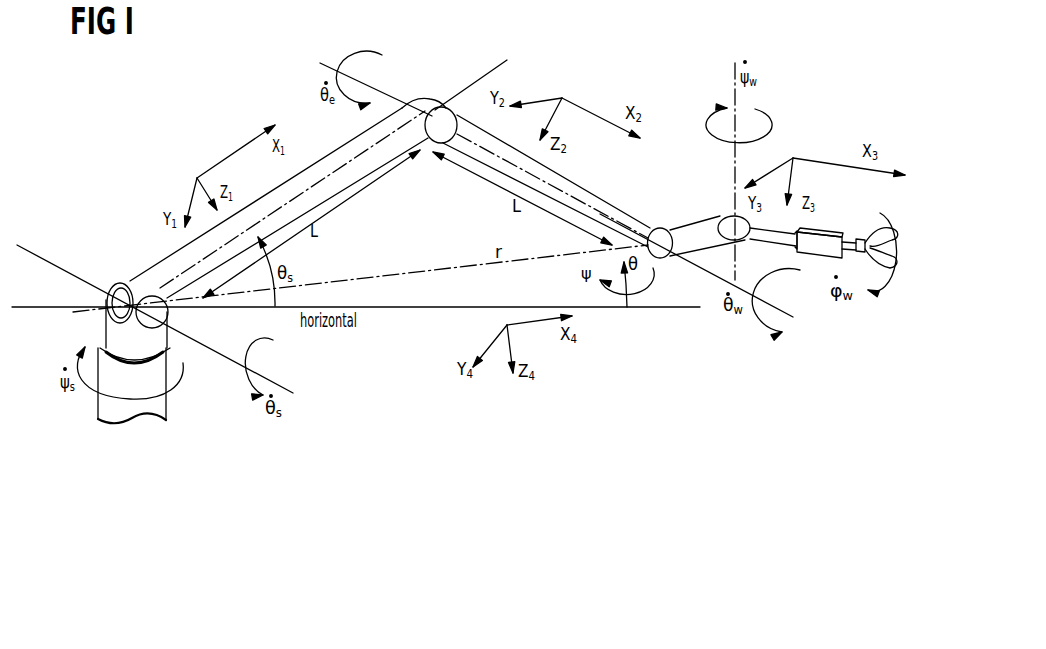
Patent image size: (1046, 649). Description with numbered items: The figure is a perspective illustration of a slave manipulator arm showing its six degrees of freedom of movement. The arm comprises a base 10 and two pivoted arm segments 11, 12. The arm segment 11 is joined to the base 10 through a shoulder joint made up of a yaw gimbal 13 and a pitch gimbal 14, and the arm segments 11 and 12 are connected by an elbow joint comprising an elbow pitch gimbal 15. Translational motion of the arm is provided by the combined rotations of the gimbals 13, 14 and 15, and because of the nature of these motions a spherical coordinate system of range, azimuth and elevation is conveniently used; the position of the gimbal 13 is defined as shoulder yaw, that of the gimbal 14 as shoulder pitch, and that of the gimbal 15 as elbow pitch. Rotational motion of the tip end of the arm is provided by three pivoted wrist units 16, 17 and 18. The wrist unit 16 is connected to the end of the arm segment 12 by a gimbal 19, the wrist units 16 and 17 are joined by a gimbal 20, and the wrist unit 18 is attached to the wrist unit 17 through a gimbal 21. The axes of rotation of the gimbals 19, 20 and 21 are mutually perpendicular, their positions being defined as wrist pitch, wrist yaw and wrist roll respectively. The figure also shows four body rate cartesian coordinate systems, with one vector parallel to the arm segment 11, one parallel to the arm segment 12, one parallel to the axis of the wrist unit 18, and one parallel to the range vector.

The base 10 is at (166, 400).
The arm segment 11 is at (327, 153).
The arm segment 12 is at (593, 185).
The yaw gimbal 13 is at (167, 347).
The pitch gimbal 14 is at (116, 285).
The elbow pitch gimbal 15 is at (423, 97).
The wrist unit 16 is at (692, 215).
The wrist unit 17 is at (773, 244).
The wrist unit 18 is at (823, 252).
The gimbal 19 is at (657, 257).
The gimbal 20 is at (737, 250).
The gimbal 21 is at (825, 232).